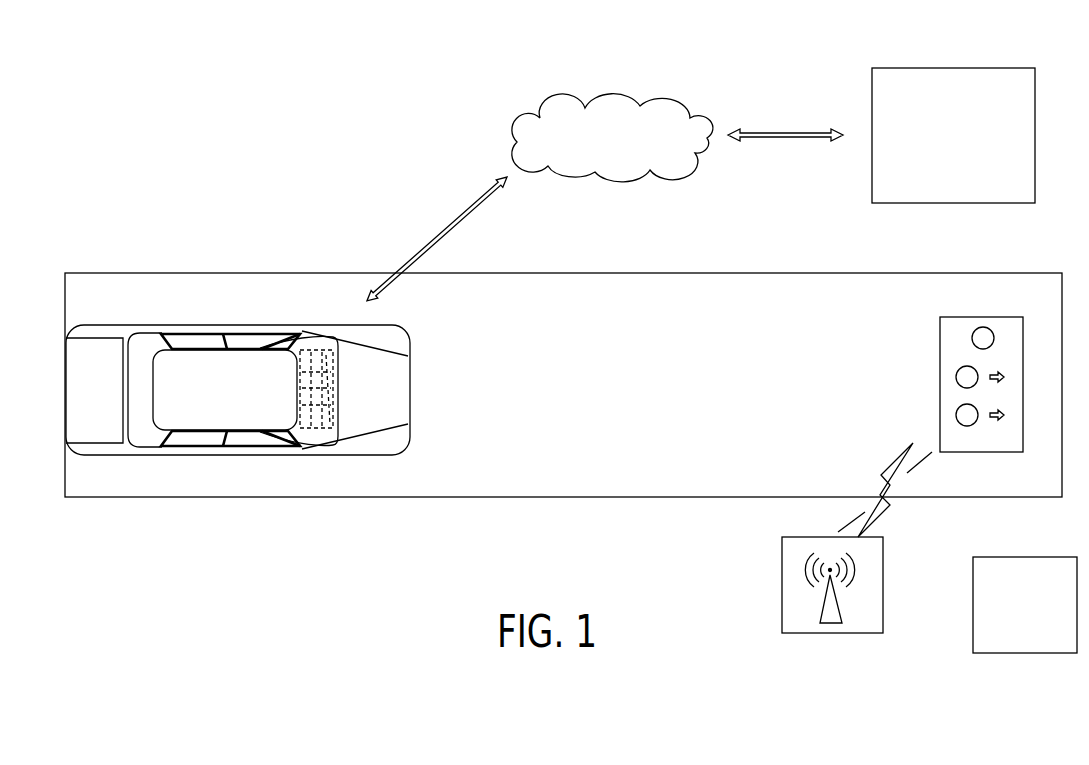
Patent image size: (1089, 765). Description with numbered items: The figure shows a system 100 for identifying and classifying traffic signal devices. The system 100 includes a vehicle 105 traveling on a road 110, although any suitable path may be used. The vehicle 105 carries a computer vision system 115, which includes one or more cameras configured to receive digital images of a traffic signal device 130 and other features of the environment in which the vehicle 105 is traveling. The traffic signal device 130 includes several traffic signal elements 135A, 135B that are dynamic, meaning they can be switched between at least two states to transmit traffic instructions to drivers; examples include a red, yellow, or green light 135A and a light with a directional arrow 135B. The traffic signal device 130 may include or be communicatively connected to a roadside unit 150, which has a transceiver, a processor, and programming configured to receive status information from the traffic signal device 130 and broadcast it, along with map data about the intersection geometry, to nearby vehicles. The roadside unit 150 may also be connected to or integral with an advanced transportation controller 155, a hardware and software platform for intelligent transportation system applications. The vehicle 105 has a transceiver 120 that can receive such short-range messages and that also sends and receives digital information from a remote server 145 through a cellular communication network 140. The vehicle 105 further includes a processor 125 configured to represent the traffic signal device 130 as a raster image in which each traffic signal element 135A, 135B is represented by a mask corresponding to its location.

The system 100 is at (246, 124).
The vehicle 105 is at (142, 330).
The road 110 is at (235, 485).
The computer vision system 115 is at (343, 415).
The transceiver 120 is at (338, 398).
The processor 125 is at (338, 365).
The traffic signal device 130 is at (940, 342).
The traffic signal element 135A is at (960, 415).
The traffic signal element 135B is at (997, 425).
The cellular communication network 140 is at (517, 142).
The remote server 145 is at (947, 78).
The roadside unit 150 is at (862, 633).
The advanced transportation controller 155 is at (1033, 653).